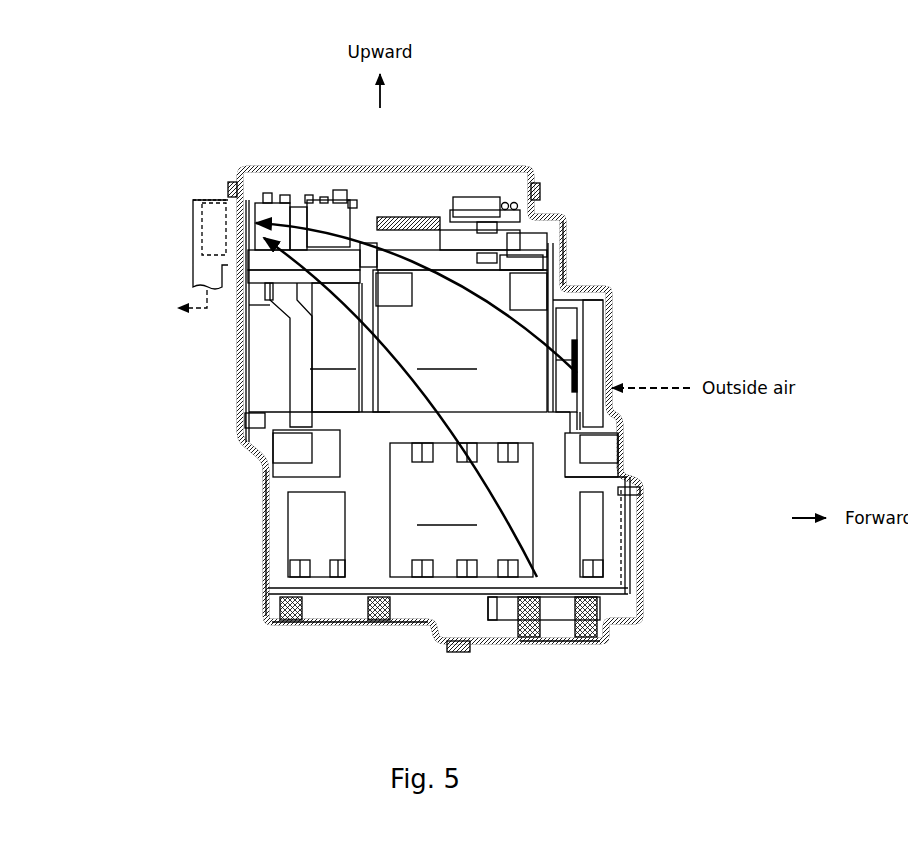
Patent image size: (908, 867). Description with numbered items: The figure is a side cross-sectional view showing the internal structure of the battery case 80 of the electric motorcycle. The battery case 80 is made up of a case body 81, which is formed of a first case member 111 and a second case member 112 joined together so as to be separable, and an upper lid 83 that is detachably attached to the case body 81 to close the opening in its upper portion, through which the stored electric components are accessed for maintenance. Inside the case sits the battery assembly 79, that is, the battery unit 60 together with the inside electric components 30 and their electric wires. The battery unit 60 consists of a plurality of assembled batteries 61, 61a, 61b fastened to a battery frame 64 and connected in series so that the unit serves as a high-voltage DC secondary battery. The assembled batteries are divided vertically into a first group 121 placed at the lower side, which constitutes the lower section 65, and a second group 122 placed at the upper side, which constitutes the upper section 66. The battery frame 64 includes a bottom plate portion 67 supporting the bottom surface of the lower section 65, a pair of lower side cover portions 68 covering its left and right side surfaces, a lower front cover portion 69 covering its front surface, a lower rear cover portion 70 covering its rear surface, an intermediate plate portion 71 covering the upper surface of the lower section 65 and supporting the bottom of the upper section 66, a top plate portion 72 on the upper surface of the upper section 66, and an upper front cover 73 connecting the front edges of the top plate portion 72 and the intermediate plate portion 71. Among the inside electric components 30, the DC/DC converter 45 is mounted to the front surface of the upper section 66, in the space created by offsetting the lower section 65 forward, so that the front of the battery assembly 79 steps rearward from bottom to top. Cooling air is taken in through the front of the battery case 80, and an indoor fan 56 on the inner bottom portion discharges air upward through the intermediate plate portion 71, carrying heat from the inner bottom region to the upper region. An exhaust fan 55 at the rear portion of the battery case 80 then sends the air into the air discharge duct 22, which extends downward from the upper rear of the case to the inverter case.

The air discharge duct 22 is at (192, 230).
The inside electric components 30 is at (447, 190).
The DC/DC converter 45 is at (566, 326).
The exhaust fan 55 is at (212, 198).
The indoor fan 56 is at (563, 613).
The battery unit 60 is at (265, 502).
The battery module 61 is at (428, 423).
The lower battery module 61a is at (461, 510).
The upper battery module 61b is at (428, 341).
The battery frame 64 is at (263, 577).
The lower section 65 is at (306, 544).
The upper section 66 is at (263, 329).
The bottom plate portion 67 is at (262, 599).
The lower side cover portions 68 is at (286, 528).
The lower front cover portion 69 is at (627, 568).
The lower rear cover portion 70 is at (255, 458).
The intermediate plate portion 71 is at (262, 434).
The top plate portion 72 is at (497, 270).
The upper front cover 73 is at (564, 263).
The battery assembly 79 is at (280, 188).
The battery case 80 is at (258, 622).
The case body 81 is at (566, 243).
The upper lid 83 is at (500, 166).
The first case member 111 is at (559, 640).
The second case member 112 is at (405, 648).
The first group 121 is at (512, 322).
The second group 122 is at (322, 553).